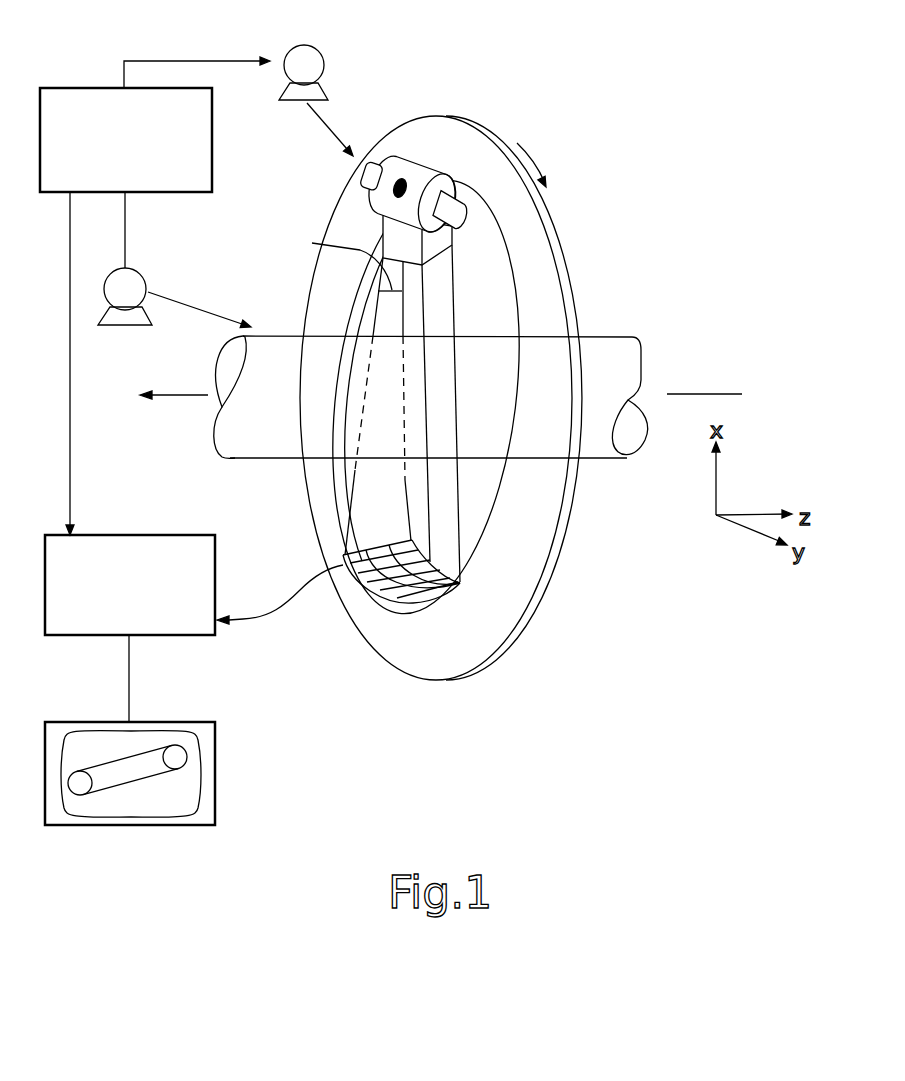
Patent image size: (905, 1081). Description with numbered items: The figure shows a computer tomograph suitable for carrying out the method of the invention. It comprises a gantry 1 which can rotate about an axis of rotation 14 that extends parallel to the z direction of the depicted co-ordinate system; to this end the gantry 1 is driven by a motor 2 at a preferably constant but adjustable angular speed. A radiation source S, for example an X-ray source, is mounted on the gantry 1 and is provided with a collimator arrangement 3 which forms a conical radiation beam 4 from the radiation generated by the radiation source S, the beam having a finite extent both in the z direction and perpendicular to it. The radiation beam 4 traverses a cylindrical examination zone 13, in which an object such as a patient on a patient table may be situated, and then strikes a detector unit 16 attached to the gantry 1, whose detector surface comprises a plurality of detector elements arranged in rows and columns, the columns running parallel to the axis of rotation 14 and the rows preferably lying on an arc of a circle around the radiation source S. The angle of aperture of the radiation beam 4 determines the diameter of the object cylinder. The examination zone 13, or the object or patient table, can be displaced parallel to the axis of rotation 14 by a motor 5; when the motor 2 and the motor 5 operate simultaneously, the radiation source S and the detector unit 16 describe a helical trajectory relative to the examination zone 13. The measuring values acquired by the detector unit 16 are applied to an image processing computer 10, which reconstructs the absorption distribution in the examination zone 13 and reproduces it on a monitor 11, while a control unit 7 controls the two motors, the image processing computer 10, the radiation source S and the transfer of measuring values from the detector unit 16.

The gantry 1 is at (537, 537).
The motor 2 is at (325, 63).
The collimator arrangement 3 is at (470, 230).
The radiation beam 4 is at (432, 490).
The motor 5 is at (145, 274).
The control unit 7 is at (75, 88).
The image processing computer 10 is at (80, 623).
The monitor 11 is at (217, 805).
The examination zone 13 is at (272, 350).
The axis of rotation 14 is at (173, 393).
The detector unit 16 is at (375, 607).
The radiation source S is at (424, 165).